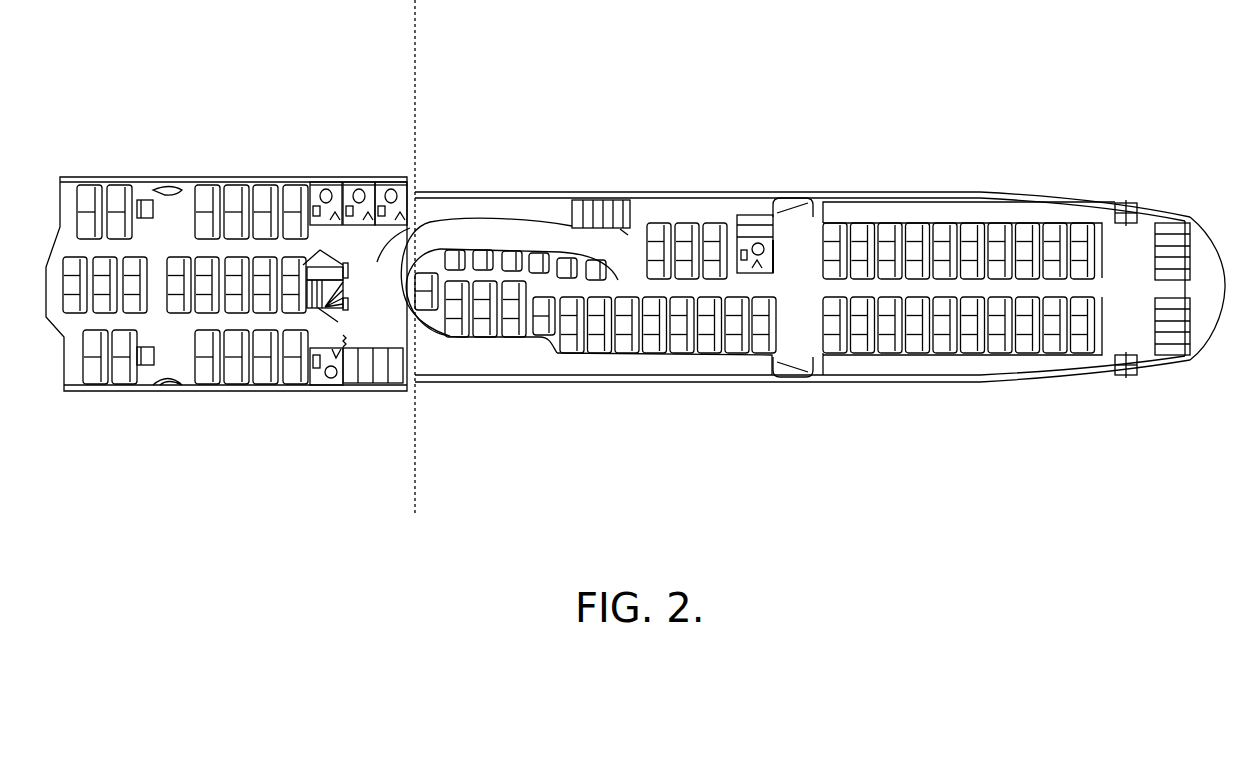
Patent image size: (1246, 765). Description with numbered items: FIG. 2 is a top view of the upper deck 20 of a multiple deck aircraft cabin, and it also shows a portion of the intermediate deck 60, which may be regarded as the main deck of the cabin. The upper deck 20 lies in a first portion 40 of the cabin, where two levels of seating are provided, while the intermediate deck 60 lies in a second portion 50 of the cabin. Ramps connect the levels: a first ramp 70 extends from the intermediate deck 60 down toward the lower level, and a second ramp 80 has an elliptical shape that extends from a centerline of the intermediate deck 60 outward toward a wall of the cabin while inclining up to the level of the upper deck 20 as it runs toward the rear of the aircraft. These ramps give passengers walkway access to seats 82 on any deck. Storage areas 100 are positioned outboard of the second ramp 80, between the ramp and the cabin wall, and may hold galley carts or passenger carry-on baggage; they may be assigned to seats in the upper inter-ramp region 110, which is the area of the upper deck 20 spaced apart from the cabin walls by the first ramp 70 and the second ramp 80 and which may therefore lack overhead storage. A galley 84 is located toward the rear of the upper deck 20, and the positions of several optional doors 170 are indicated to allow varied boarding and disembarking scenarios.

The upper deck 20 is at (1007, 290).
The first portion of the aircraft cabin 40 is at (515, 53).
The second portion of the aircraft cabin 50 is at (322, 82).
The intermediate deck 60 is at (166, 239).
The first ramp 70 is at (490, 355).
The second ramp 80 is at (465, 235).
The seats 82 is at (713, 228).
The galley 84 is at (1172, 278).
The storage areas 100 is at (594, 205).
The upper inter-ramp region 110 is at (497, 268).
The doors 170 is at (788, 197).